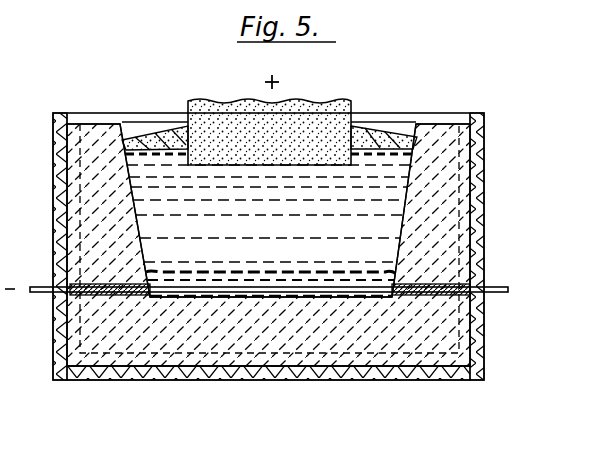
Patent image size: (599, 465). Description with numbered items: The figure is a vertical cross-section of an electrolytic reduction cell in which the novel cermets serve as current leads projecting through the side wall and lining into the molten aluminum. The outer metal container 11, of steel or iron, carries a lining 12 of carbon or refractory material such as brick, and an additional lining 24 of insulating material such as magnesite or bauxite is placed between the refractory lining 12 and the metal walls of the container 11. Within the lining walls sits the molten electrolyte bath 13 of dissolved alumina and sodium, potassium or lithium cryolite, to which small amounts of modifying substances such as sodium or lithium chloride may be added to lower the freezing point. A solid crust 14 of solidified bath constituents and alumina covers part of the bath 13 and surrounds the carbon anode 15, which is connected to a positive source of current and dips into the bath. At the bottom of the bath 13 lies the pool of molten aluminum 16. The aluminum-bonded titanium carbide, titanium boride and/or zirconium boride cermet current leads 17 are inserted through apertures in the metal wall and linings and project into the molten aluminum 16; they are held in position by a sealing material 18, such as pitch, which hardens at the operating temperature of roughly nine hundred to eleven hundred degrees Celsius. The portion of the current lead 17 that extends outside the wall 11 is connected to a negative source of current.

The metal container 11 is at (484, 122).
The lining 12 is at (447, 185).
The electrolyte bath 13 is at (276, 225).
The crust 14 is at (365, 128).
The anode 15 is at (305, 108).
The pool of molten aluminum 16 is at (285, 298).
The current leads 17 is at (508, 292).
The sealing material 18 is at (470, 277).
The additional lining 24 is at (428, 362).